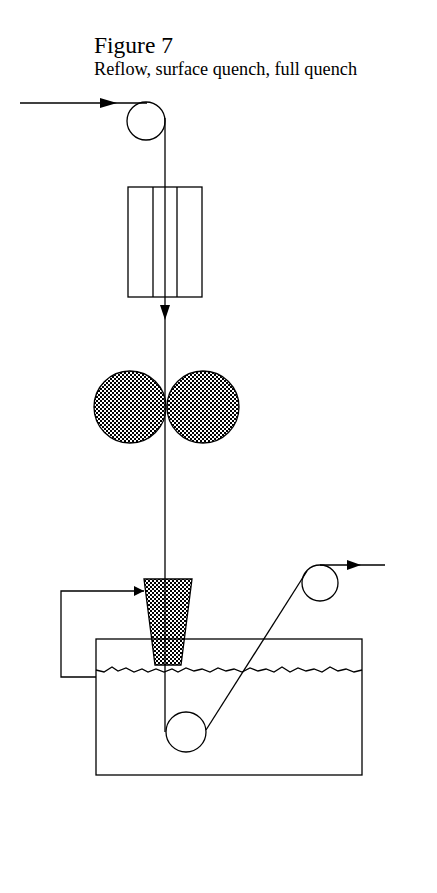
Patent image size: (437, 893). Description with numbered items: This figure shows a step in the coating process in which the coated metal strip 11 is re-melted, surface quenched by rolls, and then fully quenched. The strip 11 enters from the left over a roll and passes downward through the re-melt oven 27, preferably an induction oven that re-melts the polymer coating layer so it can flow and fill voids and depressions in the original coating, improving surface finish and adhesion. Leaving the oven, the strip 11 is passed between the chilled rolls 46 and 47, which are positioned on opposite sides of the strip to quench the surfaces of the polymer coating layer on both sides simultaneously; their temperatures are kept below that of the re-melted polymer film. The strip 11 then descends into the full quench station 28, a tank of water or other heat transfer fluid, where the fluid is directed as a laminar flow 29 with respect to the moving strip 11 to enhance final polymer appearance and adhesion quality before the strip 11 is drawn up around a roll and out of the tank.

The strip 11 is at (165, 139).
The re-melt oven 27 is at (129, 237).
The chilled roll 46 is at (94, 408).
The chilled roll 47 is at (239, 405).
The laminar flow 29 is at (155, 578).
The quench step 28 is at (362, 699).